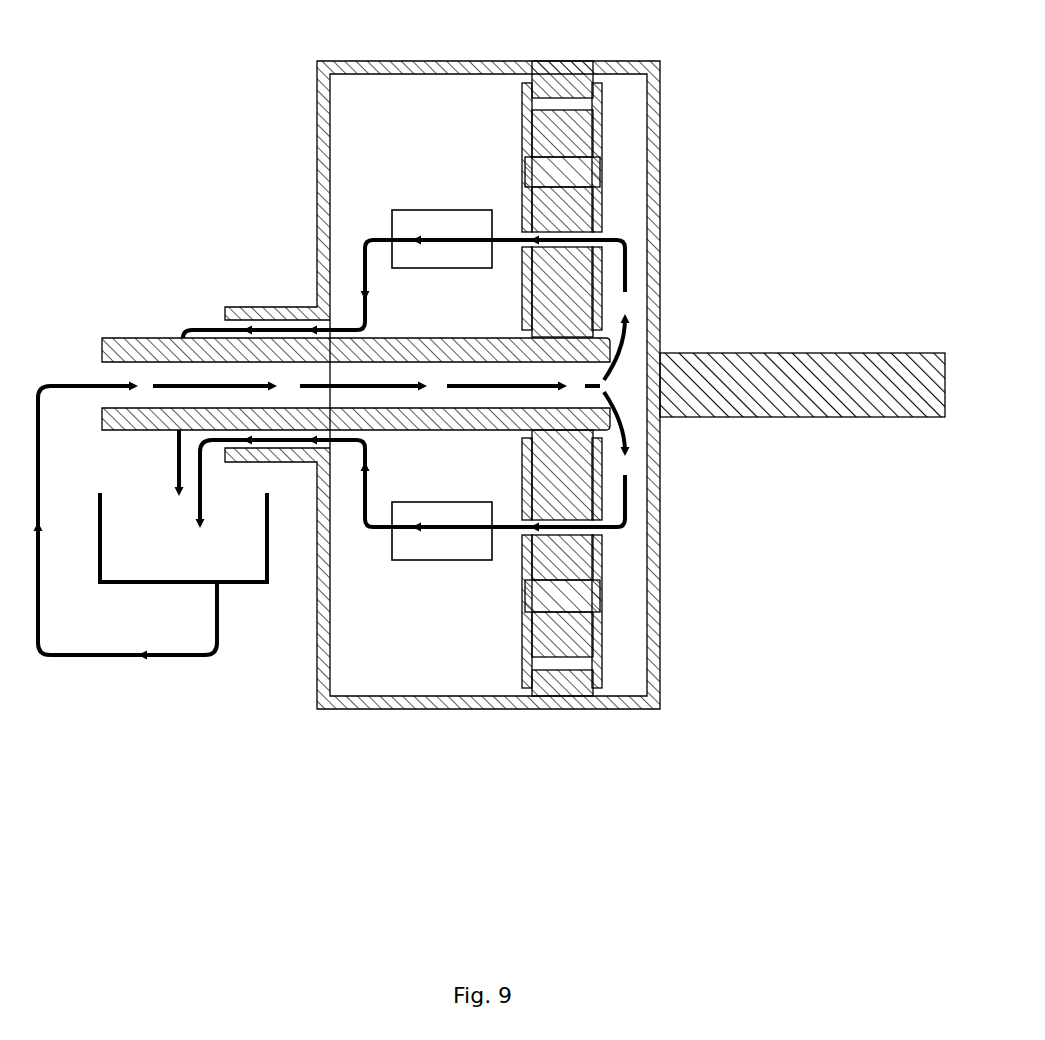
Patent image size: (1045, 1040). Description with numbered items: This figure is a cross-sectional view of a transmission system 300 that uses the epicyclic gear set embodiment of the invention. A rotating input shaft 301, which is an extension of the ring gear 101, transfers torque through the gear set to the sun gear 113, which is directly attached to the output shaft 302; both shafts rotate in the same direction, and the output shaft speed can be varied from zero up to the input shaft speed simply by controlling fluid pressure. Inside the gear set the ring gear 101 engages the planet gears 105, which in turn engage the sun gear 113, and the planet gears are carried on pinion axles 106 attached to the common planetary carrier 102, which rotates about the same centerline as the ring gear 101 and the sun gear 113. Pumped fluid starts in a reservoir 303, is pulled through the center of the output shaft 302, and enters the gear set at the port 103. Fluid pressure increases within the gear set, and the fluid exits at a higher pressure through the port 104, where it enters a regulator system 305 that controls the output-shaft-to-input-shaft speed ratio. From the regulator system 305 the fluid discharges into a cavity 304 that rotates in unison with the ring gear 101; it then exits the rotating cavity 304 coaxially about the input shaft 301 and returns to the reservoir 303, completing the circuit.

The transmission system 300 is at (738, 687).
The input shaft 301 is at (777, 377).
The output shaft 302 is at (102, 350).
The reservoir 303 is at (247, 583).
The cavity 304 is at (420, 663).
The regulator system 305 is at (405, 220).
The ring gear 101 is at (555, 82).
The planetary carrier 102 is at (525, 92).
The port 103 is at (603, 232).
The port 104 is at (522, 235).
The planet gear 105 is at (577, 140).
The pinion axle 106 is at (577, 179).
The sun gear 113 is at (575, 302).